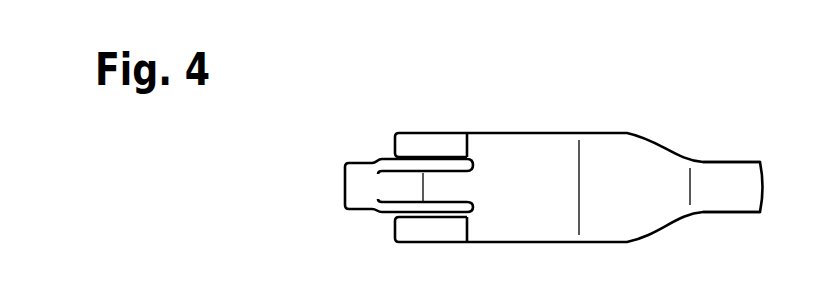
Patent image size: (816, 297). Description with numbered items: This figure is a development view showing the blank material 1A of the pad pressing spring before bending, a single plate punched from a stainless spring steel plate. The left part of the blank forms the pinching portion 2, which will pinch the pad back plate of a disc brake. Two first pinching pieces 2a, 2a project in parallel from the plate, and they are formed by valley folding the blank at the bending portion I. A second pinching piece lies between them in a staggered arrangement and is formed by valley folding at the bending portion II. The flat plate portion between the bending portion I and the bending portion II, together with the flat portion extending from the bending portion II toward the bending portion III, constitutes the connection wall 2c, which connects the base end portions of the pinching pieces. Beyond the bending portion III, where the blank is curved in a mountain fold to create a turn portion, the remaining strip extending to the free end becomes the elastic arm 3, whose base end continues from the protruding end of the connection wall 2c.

The blank material 1A is at (706, 139).
The pinching portion 2 is at (363, 196).
The first pinching piece 2a is at (432, 145).
The connection wall 2c is at (513, 223).
The elastic arm 3 is at (727, 200).
The bending portion I is at (422, 185).
The bending portion II is at (467, 227).
The bending portion III is at (580, 187).